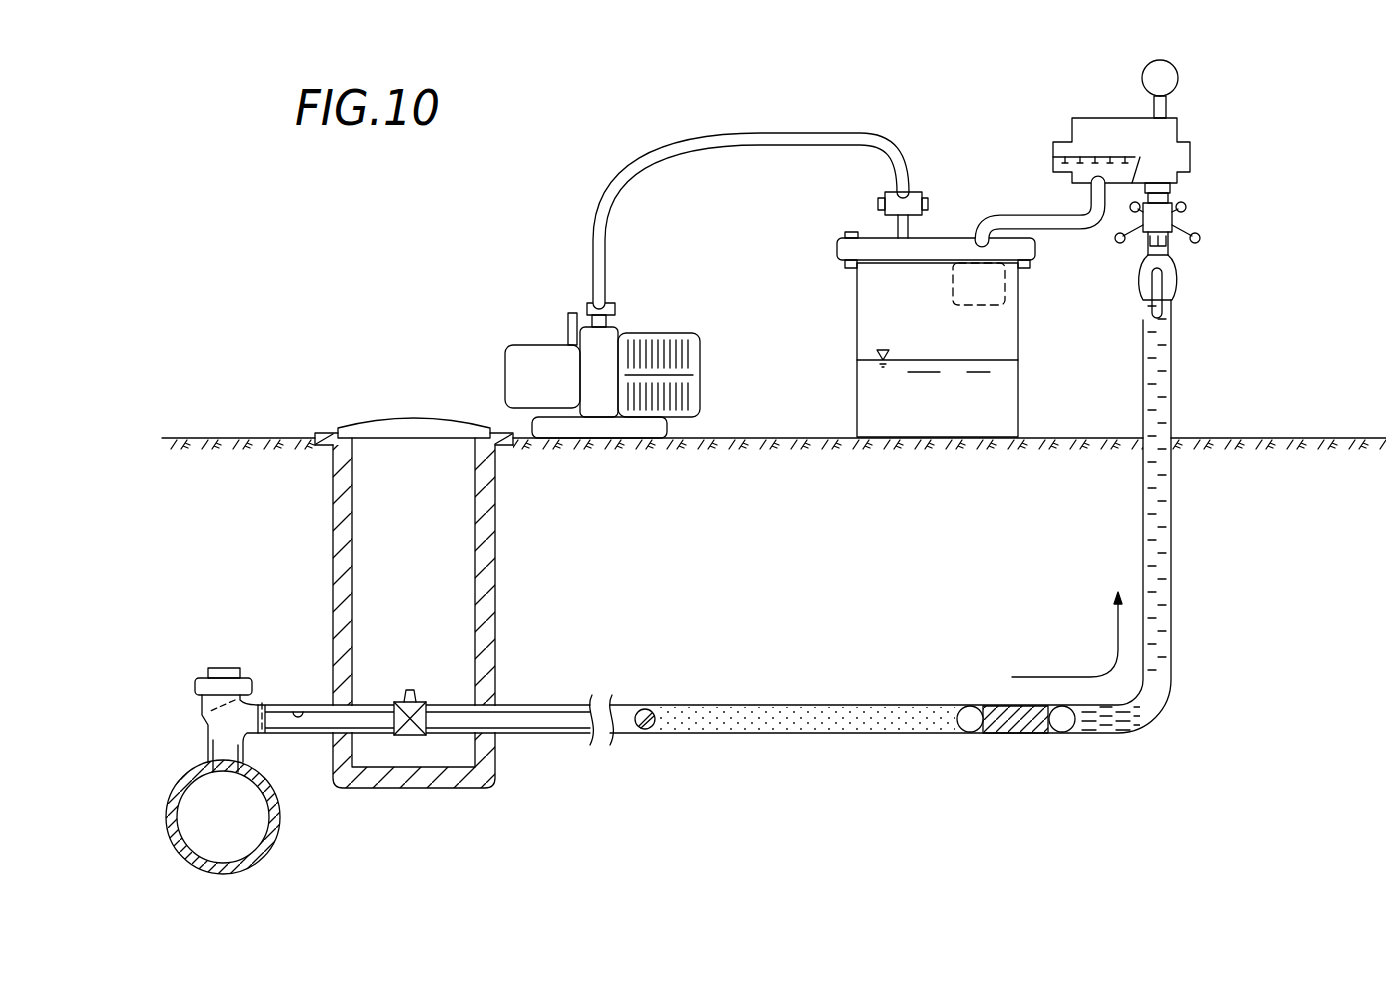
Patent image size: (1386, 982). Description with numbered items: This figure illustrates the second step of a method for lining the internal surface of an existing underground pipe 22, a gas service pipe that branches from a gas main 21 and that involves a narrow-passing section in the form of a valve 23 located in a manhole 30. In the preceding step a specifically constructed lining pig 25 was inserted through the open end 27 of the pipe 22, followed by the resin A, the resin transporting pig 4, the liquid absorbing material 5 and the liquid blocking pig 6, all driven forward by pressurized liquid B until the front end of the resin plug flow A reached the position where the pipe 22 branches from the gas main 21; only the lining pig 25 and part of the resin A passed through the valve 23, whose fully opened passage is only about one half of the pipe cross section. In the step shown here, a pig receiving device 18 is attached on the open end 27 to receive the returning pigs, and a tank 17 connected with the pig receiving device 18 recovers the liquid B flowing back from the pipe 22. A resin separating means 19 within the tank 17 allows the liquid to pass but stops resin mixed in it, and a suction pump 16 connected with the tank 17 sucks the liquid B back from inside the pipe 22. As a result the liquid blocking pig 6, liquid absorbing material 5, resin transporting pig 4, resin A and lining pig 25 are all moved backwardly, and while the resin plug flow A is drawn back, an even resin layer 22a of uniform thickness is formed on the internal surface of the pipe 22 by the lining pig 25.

The resin transporting pig 4 is at (970, 726).
The liquid absorbing material 5 is at (1018, 726).
The liquid blocking pig 6 is at (1062, 727).
The suction pump 16 is at (524, 285).
The tank 17 is at (970, 283).
The pig receiving device 18 is at (1163, 128).
The resin separating means 19 is at (1008, 312).
The gas main 21 is at (272, 848).
The underground pipe 22 is at (262, 700).
The resin layer 22a is at (297, 728).
The valve 23 is at (425, 700).
The lining pig 25 is at (645, 730).
The open end 27 is at (1178, 300).
The manhole 30 is at (400, 428).
The resin A is at (770, 710).
The liquid B is at (1143, 525).